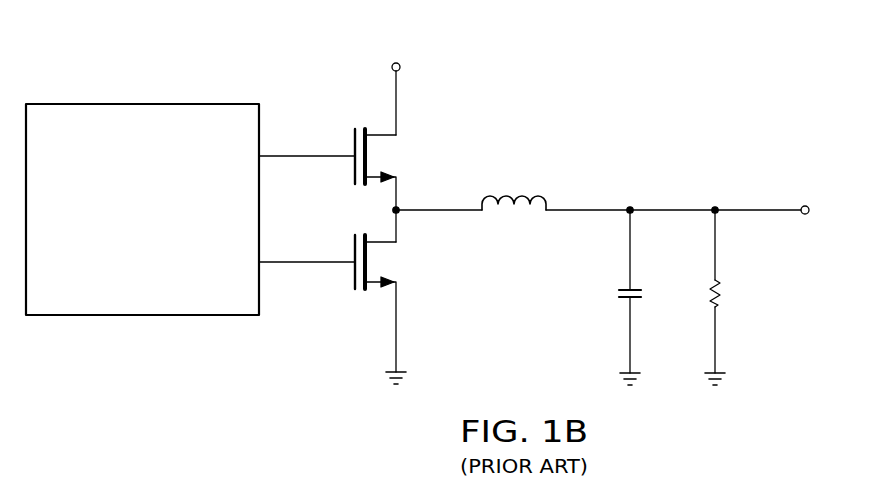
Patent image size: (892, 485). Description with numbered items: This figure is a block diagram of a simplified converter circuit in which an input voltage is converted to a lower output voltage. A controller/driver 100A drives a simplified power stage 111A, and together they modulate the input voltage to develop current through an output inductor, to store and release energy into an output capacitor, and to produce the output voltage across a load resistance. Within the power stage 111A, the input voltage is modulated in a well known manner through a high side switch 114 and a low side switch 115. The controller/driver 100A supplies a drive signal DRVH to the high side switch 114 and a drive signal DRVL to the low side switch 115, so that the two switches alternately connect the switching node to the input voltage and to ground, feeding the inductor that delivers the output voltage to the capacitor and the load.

The power stage 111A is at (705, 90).
The controller/driver 100A is at (170, 243).
The high side switch 114 is at (353, 165).
The low side switch 115 is at (353, 272).